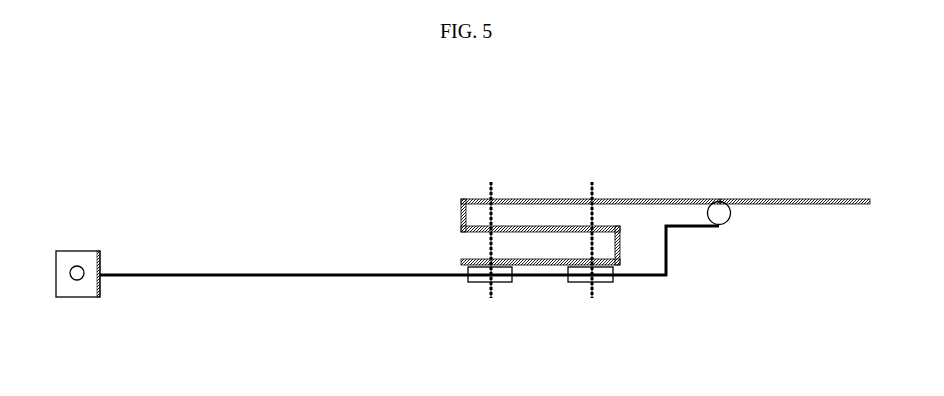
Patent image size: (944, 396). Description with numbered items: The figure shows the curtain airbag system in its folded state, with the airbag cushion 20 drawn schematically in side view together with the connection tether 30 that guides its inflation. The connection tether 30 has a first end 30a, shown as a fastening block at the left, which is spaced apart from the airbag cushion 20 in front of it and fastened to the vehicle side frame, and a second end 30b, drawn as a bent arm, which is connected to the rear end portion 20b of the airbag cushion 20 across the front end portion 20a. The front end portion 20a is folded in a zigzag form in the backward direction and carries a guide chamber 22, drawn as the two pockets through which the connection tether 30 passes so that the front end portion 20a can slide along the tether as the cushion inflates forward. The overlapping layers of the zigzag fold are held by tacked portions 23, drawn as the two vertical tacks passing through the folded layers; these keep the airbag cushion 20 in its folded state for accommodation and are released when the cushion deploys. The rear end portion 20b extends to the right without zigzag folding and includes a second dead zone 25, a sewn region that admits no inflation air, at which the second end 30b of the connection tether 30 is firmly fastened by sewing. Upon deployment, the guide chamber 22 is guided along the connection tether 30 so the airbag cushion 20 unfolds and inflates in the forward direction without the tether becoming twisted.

The airbag cushion 20 is at (671, 178).
The front end portion 20a is at (540, 257).
The rear end portion 20b is at (820, 197).
The guide chamber 22 is at (575, 283).
The tacked portions 23 is at (489, 182).
The second dead zone 25 is at (724, 218).
The connection tether 30 is at (284, 284).
The first end 30a is at (175, 278).
The second end 30b is at (691, 229).